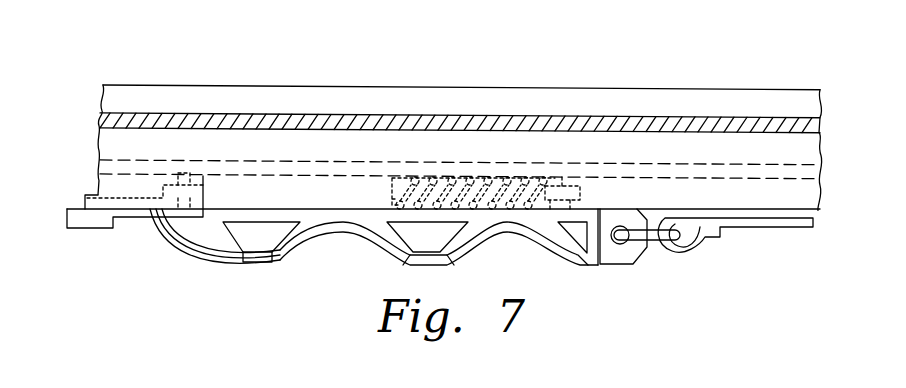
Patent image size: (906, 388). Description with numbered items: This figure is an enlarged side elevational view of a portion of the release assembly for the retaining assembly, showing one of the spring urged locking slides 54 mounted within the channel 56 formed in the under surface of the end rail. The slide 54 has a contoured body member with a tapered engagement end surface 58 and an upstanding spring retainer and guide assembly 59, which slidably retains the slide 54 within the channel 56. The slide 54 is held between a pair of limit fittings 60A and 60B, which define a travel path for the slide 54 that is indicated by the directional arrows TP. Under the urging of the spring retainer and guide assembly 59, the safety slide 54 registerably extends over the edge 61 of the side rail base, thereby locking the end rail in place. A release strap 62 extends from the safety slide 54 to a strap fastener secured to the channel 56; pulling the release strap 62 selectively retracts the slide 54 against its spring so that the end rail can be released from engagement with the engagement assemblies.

The spring urged locking slide 54 is at (343, 231).
The channel 56 is at (717, 190).
The tapered engagement end surface 58 is at (187, 258).
The spring retainer and guide assembly 59 is at (260, 190).
The limit fitting 60A is at (179, 183).
The limit fitting 60B is at (562, 188).
The edge of side rail base 61 is at (163, 209).
The release strap 62 is at (762, 228).
The travel path directional arrows TP is at (362, 147).